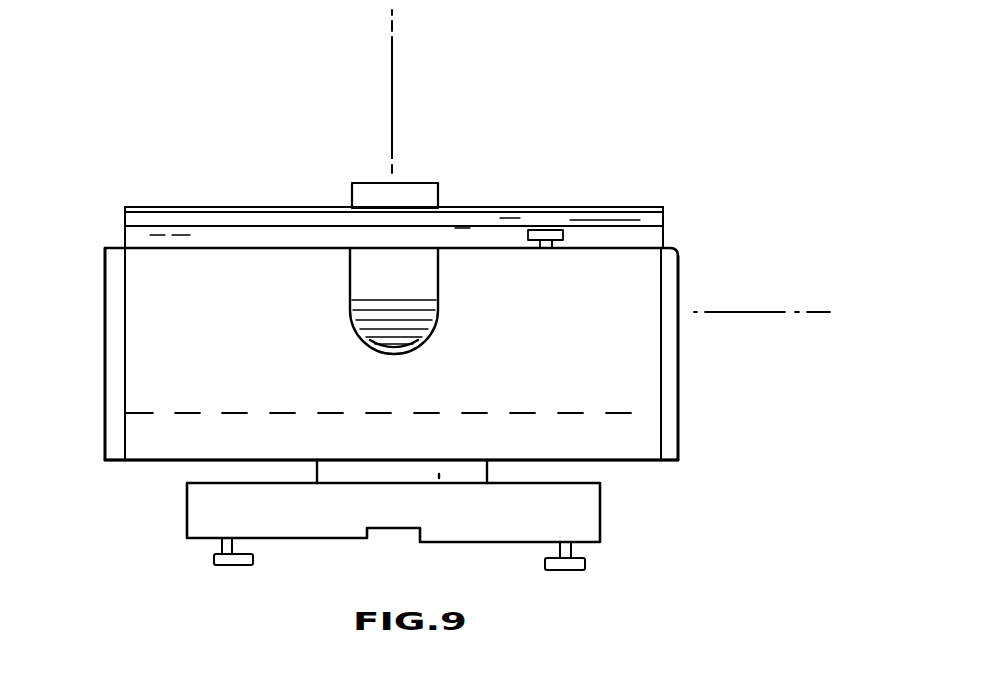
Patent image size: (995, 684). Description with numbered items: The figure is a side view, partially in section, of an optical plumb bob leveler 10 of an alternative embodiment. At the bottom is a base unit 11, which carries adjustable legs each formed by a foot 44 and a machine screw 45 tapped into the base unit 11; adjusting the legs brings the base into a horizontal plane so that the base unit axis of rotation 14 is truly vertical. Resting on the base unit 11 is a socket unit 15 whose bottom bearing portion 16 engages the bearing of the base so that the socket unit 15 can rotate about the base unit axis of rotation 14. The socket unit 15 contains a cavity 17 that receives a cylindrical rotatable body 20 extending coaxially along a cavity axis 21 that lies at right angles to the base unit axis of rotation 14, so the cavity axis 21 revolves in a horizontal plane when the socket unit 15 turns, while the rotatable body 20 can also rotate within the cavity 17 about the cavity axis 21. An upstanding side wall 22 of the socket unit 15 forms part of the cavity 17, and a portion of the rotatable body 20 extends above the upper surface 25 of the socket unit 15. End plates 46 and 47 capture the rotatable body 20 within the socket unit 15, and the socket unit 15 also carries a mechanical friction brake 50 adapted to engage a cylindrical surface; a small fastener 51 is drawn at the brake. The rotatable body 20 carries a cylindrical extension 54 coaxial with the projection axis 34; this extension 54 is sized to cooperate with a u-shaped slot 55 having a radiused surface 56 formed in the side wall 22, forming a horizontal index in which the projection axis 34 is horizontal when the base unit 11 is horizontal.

The optical plumb bob leveler 10 is at (694, 221).
The base unit 11 is at (604, 531).
The base unit axis of rotation 14 is at (393, 80).
The socket unit 15 is at (619, 466).
The bottom bearing portion 16 is at (317, 468).
The cavity 17 is at (640, 416).
The rotatable body 20 is at (623, 210).
The cavity axis 21 is at (780, 311).
The side wall 22 is at (162, 328).
The upper surface 25 is at (206, 248).
The projection axis 34 is at (393, 157).
The foot 44 is at (250, 565).
The machine screw 45 is at (237, 548).
The end plate 46 is at (105, 268).
The end plate 47 is at (682, 272).
The mechanical friction brake 50 is at (560, 247).
The screw head 51 is at (551, 229).
The cylindrical extension 54 is at (366, 183).
The u-shaped slot 55 is at (355, 318).
The radiused surface 56 is at (392, 351).